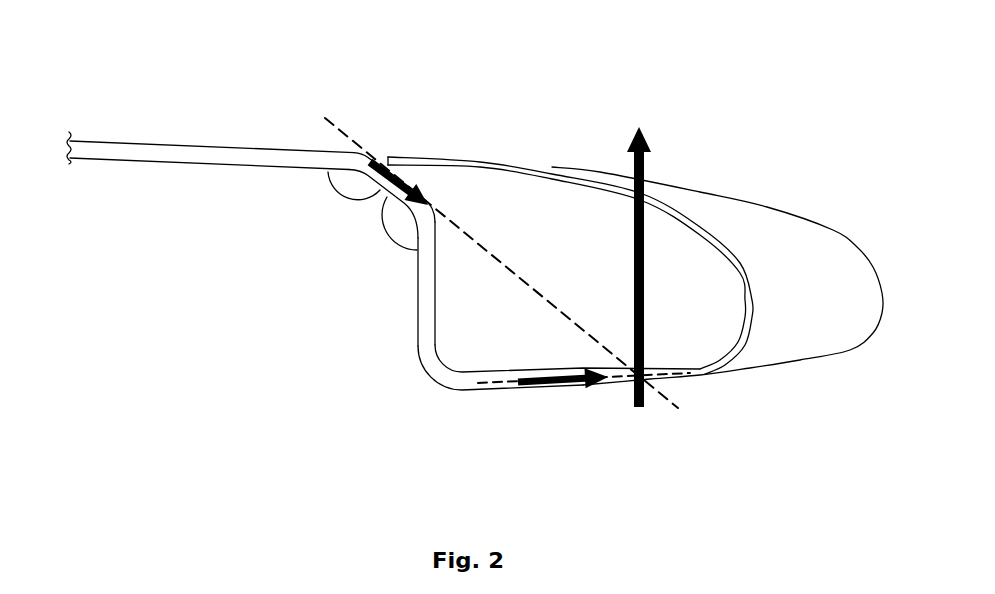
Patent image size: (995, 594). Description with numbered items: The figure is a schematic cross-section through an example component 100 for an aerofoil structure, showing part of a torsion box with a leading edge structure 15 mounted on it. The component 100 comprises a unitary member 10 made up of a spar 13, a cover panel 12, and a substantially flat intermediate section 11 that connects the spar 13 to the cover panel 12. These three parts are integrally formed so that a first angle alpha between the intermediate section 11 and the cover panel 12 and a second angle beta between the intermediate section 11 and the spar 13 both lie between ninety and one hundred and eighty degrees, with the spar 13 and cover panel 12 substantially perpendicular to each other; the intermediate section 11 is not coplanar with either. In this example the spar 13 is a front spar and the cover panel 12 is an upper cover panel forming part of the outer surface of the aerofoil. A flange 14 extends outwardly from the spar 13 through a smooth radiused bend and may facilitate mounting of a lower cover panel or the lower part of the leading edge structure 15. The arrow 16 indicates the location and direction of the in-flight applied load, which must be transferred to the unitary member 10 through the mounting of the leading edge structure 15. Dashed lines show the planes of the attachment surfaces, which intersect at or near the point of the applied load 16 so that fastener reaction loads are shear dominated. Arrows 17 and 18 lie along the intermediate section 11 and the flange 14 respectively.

The unitary member 10 is at (383, 261).
The intermediate section 11 is at (397, 188).
The cover panel 12 is at (158, 160).
The spar 13 is at (427, 287).
The flange 14 is at (475, 381).
The leading edge structure 15 is at (796, 179).
The applied load 16 is at (643, 220).
The inclined flow arrow 17 is at (397, 172).
The horizontal flow arrow 18 is at (563, 388).
The component 100 is at (176, 344).